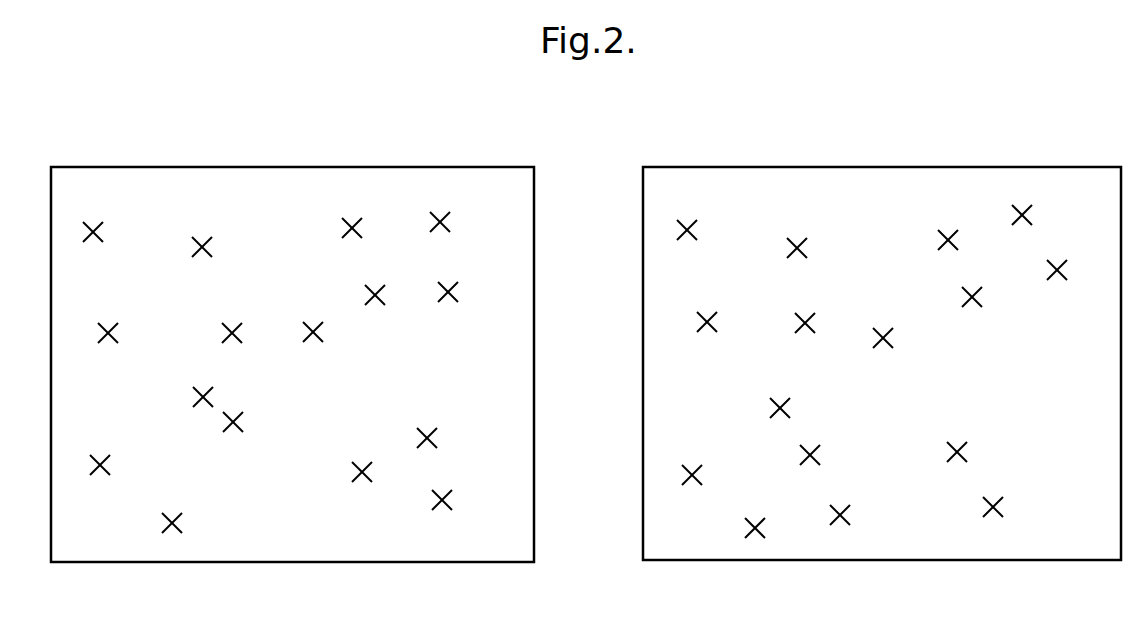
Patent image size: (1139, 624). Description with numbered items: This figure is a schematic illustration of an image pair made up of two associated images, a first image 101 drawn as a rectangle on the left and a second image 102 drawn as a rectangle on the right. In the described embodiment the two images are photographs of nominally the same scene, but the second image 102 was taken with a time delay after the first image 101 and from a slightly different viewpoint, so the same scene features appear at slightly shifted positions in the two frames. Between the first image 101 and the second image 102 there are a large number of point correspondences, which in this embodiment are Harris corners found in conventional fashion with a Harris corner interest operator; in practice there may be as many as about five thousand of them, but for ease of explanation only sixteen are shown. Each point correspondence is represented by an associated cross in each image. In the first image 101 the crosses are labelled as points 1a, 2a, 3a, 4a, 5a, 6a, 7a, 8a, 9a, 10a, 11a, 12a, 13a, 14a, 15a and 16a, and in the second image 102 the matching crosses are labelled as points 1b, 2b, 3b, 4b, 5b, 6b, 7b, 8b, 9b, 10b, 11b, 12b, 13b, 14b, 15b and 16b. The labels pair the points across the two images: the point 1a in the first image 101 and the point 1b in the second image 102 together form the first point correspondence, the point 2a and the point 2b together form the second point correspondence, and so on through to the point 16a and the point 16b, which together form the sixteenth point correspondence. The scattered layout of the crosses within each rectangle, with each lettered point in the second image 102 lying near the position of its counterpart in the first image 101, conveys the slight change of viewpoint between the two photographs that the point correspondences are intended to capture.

The first image 101 is at (378, 167).
The second image 102 is at (980, 166).
The point 1a is at (97, 222).
The point 2a is at (203, 238).
The point 3a is at (110, 322).
The point 4a is at (232, 322).
The point 5a is at (100, 455).
The point 6a is at (193, 396).
The point 7a is at (163, 523).
The point 8a is at (233, 432).
The point 9a is at (313, 322).
The point 10a is at (343, 226).
The point 11a is at (448, 220).
The point 12a is at (376, 287).
The point 13a is at (450, 285).
The point 14a is at (360, 482).
The point 15a is at (436, 440).
The point 16a is at (444, 510).
The point 1b is at (690, 220).
The point 2b is at (797, 238).
The point 3b is at (706, 312).
The point 4b is at (808, 313).
The point 5b is at (692, 465).
The point 6b is at (780, 398).
The point 7b is at (756, 518).
The point 8b is at (819, 452).
The point 9b is at (884, 328).
The point 10b is at (940, 237).
The point 11b is at (1030, 215).
The point 12b is at (973, 307).
The point 13b is at (1058, 280).
The point 14b is at (849, 514).
The point 15b is at (958, 442).
The point 16b is at (1002, 505).